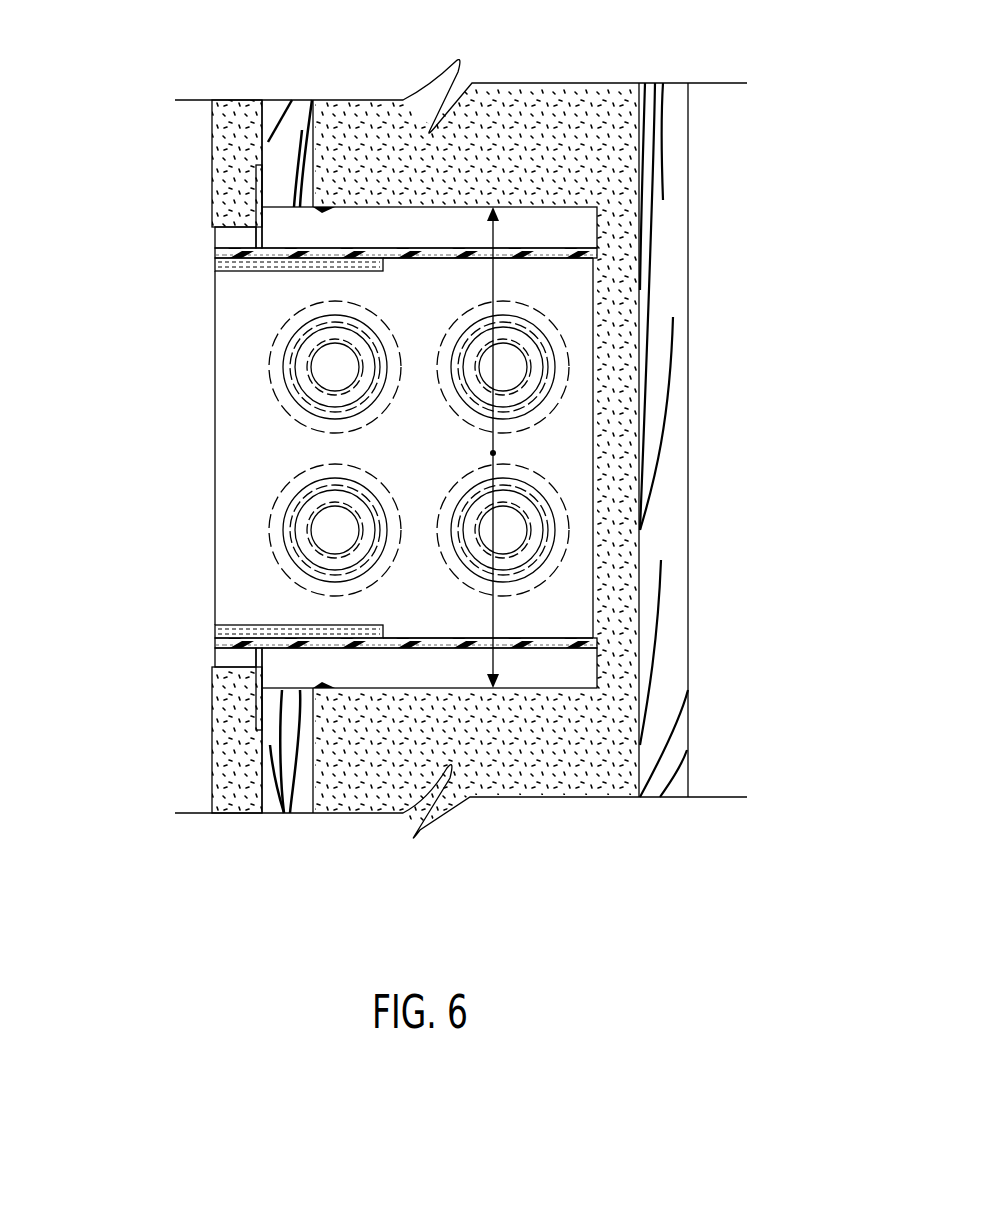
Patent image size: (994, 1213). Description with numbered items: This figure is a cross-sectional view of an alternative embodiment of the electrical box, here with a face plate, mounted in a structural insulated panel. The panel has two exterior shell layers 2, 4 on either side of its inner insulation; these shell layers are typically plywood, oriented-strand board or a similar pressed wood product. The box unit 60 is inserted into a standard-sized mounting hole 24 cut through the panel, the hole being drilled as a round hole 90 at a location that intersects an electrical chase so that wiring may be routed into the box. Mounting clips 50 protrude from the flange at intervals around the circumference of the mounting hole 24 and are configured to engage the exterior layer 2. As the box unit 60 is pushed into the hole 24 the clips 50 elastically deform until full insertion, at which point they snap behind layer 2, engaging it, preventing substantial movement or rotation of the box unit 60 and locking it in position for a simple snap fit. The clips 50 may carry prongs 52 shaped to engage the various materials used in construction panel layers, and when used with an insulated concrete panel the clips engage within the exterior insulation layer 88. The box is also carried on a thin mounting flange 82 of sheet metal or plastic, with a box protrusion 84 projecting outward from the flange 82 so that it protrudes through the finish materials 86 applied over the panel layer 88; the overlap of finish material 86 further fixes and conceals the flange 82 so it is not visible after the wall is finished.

The exterior shell layer 2 is at (296, 98).
The exterior shell layer 4 is at (690, 315).
The mounting hole 24 is at (493, 453).
The mounting clip 50 is at (320, 212).
The prong 52 is at (317, 205).
The box unit 60 is at (245, 447).
The mounting flange 82 is at (243, 210).
The box protrusion 84 is at (232, 265).
The finish material 86 is at (228, 182).
The exterior panel layer 88 is at (585, 172).
The round hole 90 is at (550, 663).